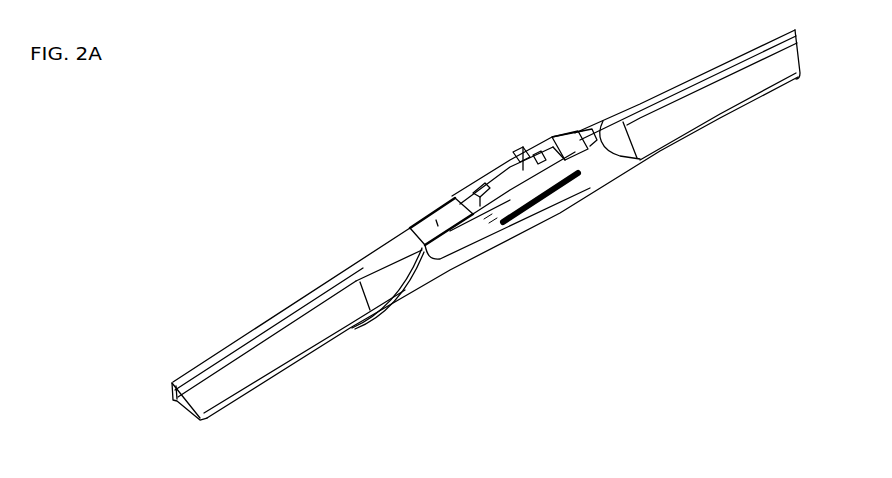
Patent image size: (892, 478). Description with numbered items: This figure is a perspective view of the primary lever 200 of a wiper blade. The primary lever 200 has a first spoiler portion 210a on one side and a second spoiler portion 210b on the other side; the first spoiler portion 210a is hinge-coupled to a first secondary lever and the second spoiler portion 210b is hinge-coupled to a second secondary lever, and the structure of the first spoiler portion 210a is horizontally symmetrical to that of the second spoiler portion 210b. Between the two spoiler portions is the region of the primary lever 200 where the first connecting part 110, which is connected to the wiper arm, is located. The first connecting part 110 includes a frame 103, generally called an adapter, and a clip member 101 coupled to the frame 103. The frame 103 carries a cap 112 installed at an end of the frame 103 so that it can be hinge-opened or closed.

The primary lever 200 is at (268, 226).
The first spoiler portion 210a is at (270, 319).
The second spoiler portion 210b is at (707, 77).
The first connecting part 110 is at (427, 117).
The cap 112 is at (426, 206).
The clip member 101 is at (512, 153).
The frame 103 is at (465, 177).